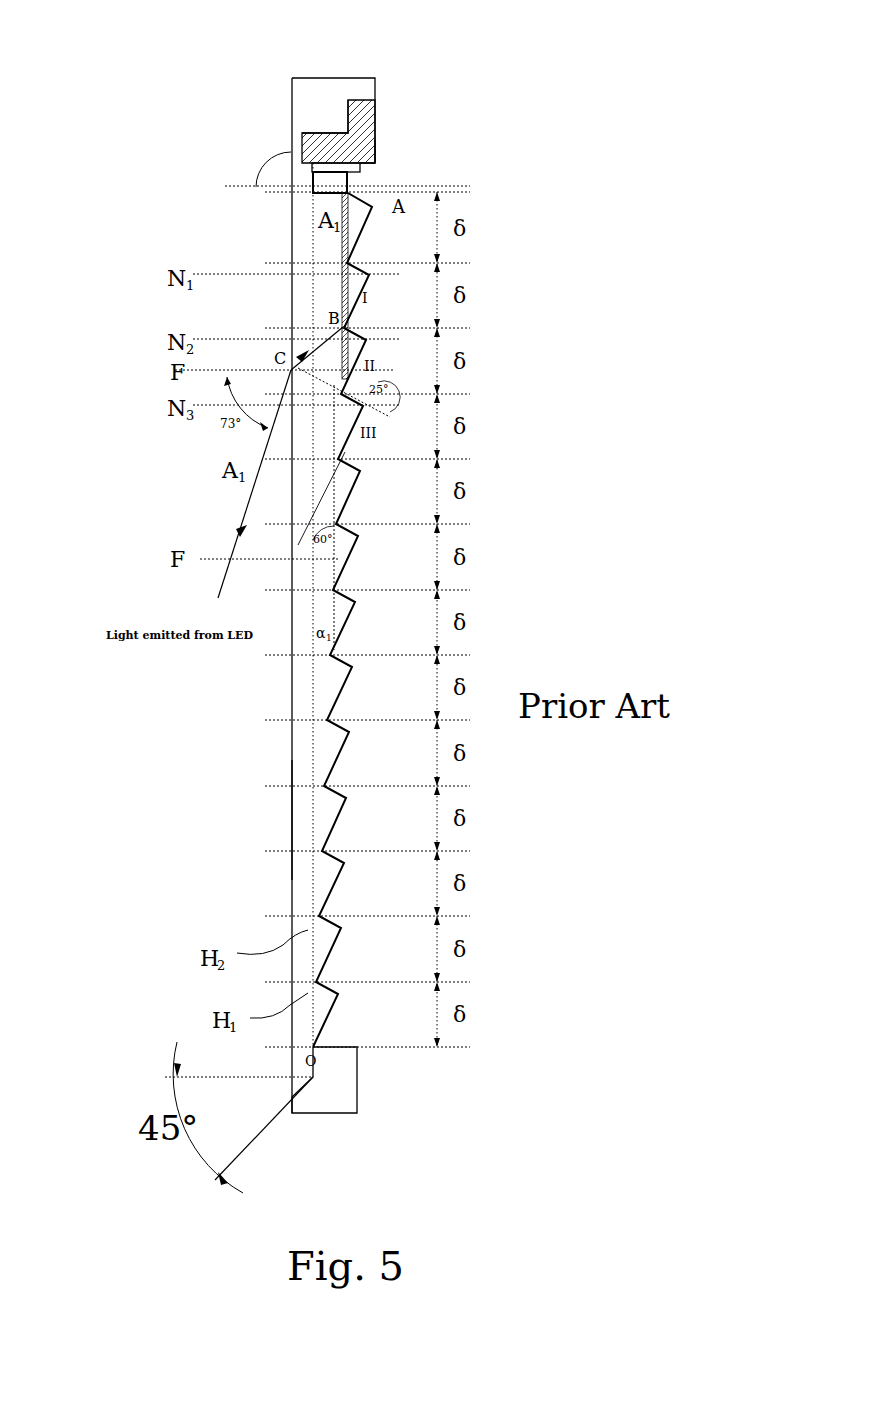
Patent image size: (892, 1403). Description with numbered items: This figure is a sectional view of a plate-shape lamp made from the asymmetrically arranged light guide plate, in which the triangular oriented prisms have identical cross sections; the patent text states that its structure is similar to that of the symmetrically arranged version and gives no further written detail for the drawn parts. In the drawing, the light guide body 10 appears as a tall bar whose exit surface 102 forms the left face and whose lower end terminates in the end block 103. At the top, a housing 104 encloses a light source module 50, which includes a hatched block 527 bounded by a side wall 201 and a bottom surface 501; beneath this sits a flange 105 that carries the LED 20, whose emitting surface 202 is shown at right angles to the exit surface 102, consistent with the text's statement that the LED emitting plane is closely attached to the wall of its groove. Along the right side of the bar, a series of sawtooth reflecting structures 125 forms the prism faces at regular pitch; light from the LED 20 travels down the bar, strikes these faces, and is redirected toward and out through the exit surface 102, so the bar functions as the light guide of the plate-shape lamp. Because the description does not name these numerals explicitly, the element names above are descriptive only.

The light guide bar 10 is at (292, 770).
The housing 104 is at (318, 110).
The heat sink block 527 is at (378, 105).
The light source module 50 is at (332, 118).
The side wall of block 201 is at (378, 150).
The bottom surface of block 501 is at (378, 160).
The LED mounting flange 105 is at (350, 183).
The LED light source 20 is at (318, 205).
The light emitting surface 202 is at (278, 182).
The reflecting sawtooth structures 125 is at (363, 290).
The light exit surface 102 is at (292, 822).
The bottom end block 103 is at (338, 1092).